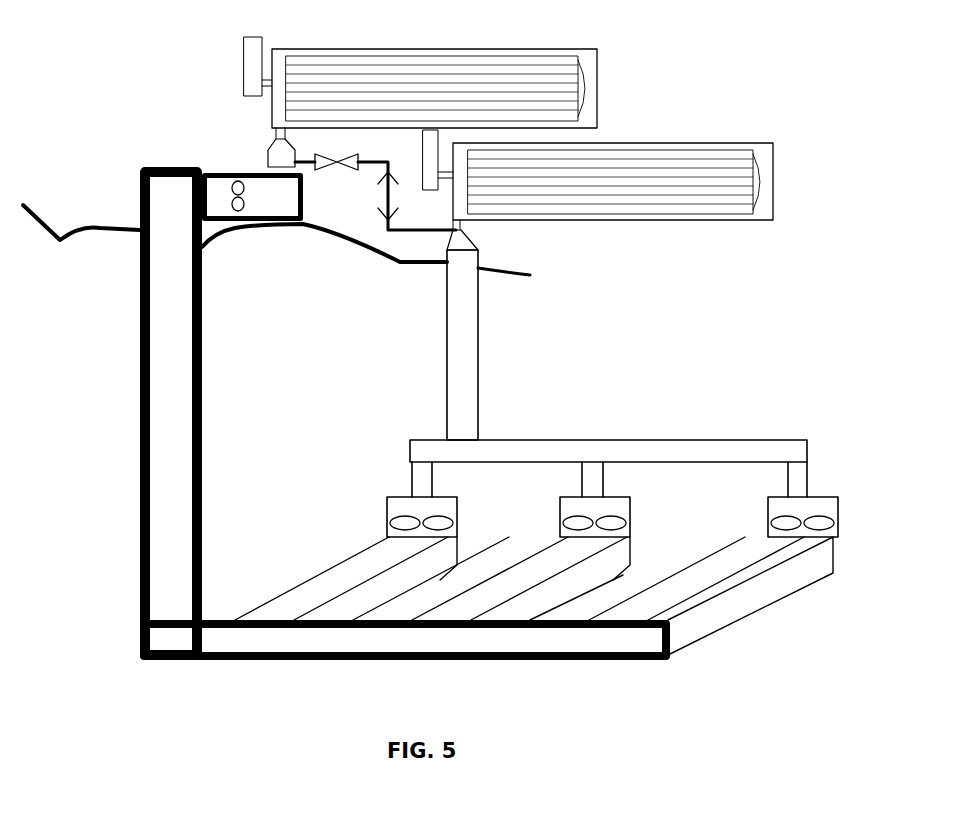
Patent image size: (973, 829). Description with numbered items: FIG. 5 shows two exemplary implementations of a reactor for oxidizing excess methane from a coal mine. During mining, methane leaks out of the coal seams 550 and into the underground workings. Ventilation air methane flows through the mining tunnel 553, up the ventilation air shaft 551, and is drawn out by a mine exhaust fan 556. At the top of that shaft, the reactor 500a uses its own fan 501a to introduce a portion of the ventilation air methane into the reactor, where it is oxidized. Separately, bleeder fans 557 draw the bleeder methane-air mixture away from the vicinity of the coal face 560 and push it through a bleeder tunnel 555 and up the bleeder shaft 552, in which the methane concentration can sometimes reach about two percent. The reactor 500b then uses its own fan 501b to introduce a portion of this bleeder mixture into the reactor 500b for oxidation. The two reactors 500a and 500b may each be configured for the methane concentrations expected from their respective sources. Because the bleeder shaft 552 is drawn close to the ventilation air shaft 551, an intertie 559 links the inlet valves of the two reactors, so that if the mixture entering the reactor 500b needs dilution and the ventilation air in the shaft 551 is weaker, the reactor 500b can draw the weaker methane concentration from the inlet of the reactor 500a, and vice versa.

The reactor 500a is at (598, 84).
The reactor 500b is at (668, 135).
The fan 501a is at (278, 143).
The fan 501b is at (466, 236).
The coal seams 550 is at (807, 553).
The ventilation air shaft 551 is at (138, 409).
The bleeder shaft 552 is at (478, 308).
The mining tunnel 553 is at (622, 662).
The bleeder tunnel 555 is at (808, 450).
The mine exhaust fan 556 is at (200, 172).
The bleeder fans 557 is at (820, 520).
The intertie 559 is at (347, 165).
The coal face 560 is at (762, 493).